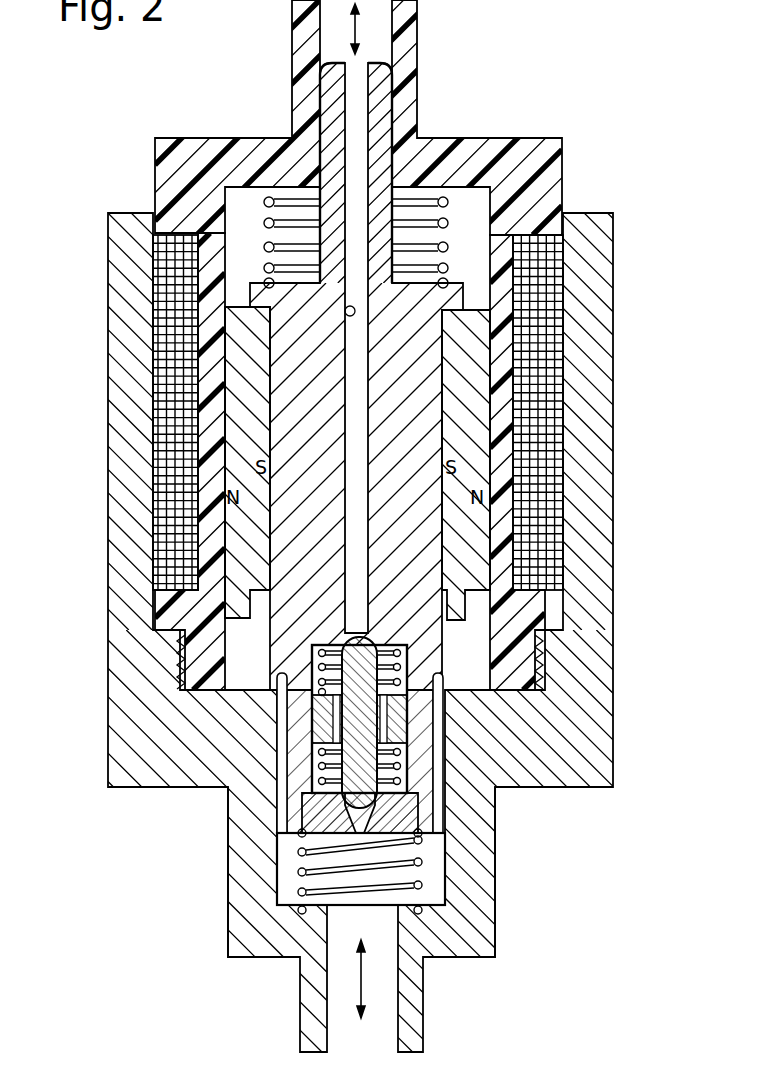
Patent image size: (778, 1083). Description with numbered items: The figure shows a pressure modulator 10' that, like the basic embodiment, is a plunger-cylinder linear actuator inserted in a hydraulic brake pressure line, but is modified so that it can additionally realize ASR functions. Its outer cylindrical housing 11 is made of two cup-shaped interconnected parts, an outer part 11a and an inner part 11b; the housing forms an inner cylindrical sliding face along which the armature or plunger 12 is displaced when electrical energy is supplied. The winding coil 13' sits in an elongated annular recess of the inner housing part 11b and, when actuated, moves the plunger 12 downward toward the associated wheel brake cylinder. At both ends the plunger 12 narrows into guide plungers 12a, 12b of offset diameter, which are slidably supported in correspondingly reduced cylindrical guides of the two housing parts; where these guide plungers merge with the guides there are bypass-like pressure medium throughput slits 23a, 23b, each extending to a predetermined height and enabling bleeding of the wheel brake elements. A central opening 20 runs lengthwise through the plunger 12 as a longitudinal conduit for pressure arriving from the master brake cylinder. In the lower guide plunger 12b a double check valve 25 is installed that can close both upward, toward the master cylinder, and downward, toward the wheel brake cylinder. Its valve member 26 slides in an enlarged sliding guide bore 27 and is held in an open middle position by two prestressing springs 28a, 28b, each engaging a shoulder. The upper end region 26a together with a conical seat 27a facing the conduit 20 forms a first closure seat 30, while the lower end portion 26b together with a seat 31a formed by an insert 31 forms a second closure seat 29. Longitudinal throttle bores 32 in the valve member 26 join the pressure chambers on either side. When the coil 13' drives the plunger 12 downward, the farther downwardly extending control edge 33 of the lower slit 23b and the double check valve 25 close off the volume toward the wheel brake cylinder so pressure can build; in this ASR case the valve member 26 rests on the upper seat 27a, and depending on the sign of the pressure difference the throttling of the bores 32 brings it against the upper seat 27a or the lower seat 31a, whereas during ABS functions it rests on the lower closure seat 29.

The pressure modulator 10' is at (543, 629).
The outer cylindrical housing 11 is at (595, 665).
The outer housing part 11a is at (605, 748).
The inner housing part 11b is at (550, 163).
The plunger 12 is at (272, 385).
The upper guide plunger 12a is at (328, 135).
The lower guide plunger 12b is at (296, 778).
The winding coil 13' is at (312, 412).
The opening 20 is at (345, 308).
The bypass throughput slit 23a is at (400, 104).
The bypass throughput slit 23b is at (440, 822).
The double check valve 25 is at (312, 770).
The valve member 26 is at (325, 722).
The end region of valve member 26a is at (318, 662).
The lower end portion of valve member 26b is at (455, 848).
The sliding guide bore 27 is at (405, 780).
The conical seat 27a is at (330, 642).
The prestressing spring 28a is at (320, 692).
The prestressing spring 28b is at (300, 834).
The second closure seat 29 is at (430, 838).
The first closure seat 30 is at (366, 640).
The insert 31 is at (340, 832).
The seat 31a is at (322, 800).
The longitudinal throttle bores 32 is at (410, 722).
The control edge 33 is at (443, 667).